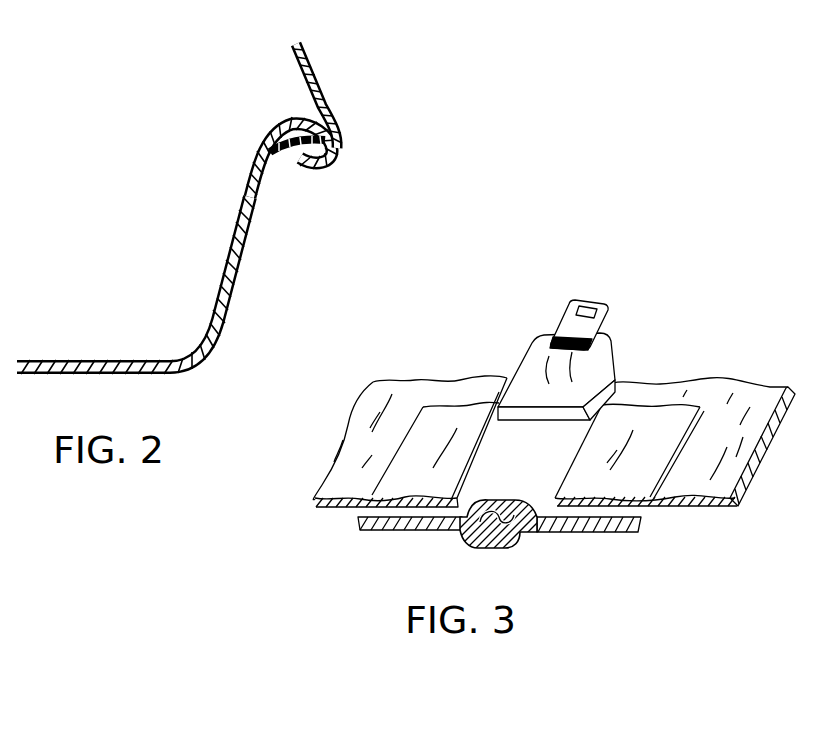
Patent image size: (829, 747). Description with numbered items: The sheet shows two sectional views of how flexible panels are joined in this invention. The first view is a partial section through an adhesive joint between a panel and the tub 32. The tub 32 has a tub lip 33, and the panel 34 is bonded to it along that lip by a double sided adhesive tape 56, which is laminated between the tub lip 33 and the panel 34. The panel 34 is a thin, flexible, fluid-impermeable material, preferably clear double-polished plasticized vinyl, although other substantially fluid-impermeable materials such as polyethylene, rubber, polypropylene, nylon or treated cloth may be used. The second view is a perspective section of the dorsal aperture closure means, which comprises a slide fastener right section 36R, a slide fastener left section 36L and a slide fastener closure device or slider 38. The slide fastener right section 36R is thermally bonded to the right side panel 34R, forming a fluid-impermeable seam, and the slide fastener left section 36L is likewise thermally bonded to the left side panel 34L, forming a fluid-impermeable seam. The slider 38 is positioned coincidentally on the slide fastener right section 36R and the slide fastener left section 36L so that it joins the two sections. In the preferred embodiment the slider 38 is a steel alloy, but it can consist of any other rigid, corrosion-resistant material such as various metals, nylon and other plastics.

In FIG. 2, the tub 32 is at (223, 275).
In FIG. 2, the tub lip 33 is at (288, 120).
In FIG. 2, the panel 34 is at (322, 92).
In FIG. 2, the double sided adhesive tape 56 is at (293, 163).
In FIG. 3, the left side panel 34L is at (443, 407).
In FIG. 3, the right side panel 34R is at (777, 343).
In FIG. 3, the slide fastener left section 36L is at (410, 533).
In FIG. 3, the slide fastener right section 36R is at (603, 522).
In FIG. 3, the slider 38 is at (603, 300).